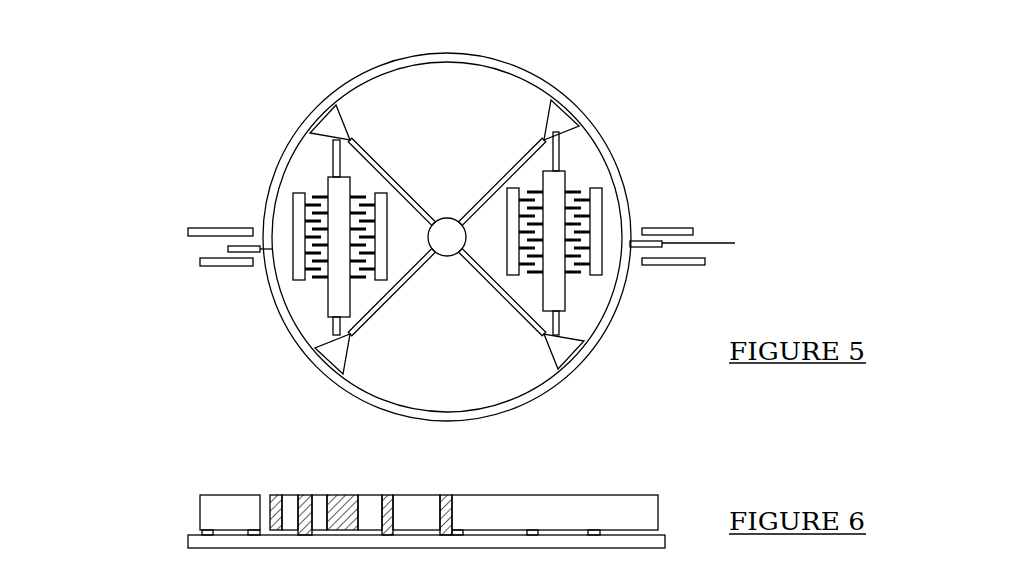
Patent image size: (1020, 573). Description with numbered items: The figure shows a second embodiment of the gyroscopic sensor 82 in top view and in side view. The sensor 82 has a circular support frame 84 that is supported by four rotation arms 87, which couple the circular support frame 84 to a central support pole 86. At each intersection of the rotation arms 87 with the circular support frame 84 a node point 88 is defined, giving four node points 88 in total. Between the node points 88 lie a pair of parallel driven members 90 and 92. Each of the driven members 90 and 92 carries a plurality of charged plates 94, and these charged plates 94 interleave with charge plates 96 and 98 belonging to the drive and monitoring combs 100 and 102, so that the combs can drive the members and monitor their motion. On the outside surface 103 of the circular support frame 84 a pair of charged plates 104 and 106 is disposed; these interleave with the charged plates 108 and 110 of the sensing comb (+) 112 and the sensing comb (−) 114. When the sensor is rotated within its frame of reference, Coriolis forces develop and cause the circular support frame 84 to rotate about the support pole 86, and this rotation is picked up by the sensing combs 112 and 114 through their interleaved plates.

In FIG. 5, the gyroscopic sensor 82 is at (452, 226).
In FIG. 6, the gyroscopic sensor 82 is at (426, 484).
In FIG. 5, the circular support frame 84 is at (445, 226).
In FIG. 5, the support pole 86 is at (448, 228).
In FIG. 5, the rotation arms 87 is at (421, 196).
In FIG. 5, the node points 88 is at (318, 148).
In FIG. 5, the driven member 90 is at (446, 233).
In FIG. 5, the driven member 92 is at (590, 132).
In FIG. 5, the charged plates 94 is at (452, 243).
In FIG. 5, the charge plates 96 is at (452, 258).
In FIG. 5, the charge plates 98 is at (372, 186).
In FIG. 6, the charge plates 98 is at (388, 494).
In FIG. 5, the drive and monitoring comb 100 is at (293, 270).
In FIG. 6, the drive and monitoring comb 100 is at (303, 492).
In FIG. 5, the drive and monitoring comb 102 is at (505, 263).
In FIG. 5, the outside surface 103 is at (313, 108).
In FIG. 6, the outside surface 103 is at (277, 497).
In FIG. 5, the charged plate 104 is at (223, 228).
In FIG. 5, the charged plate 106 is at (230, 273).
In FIG. 5, the charged plate 108 is at (255, 242).
In FIG. 5, the charged plate 110 is at (720, 239).
In FIG. 5, the sensing comb (+) 112 is at (658, 246).
In FIG. 5, the sensing comb (−) 114 is at (227, 252).